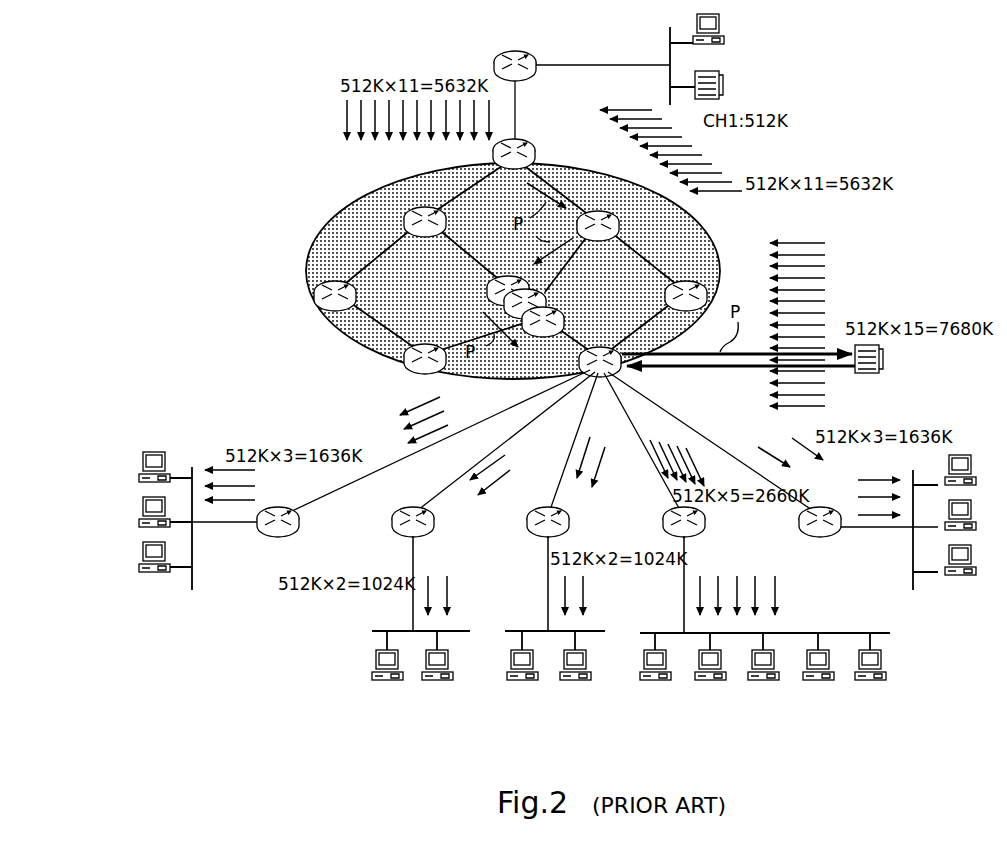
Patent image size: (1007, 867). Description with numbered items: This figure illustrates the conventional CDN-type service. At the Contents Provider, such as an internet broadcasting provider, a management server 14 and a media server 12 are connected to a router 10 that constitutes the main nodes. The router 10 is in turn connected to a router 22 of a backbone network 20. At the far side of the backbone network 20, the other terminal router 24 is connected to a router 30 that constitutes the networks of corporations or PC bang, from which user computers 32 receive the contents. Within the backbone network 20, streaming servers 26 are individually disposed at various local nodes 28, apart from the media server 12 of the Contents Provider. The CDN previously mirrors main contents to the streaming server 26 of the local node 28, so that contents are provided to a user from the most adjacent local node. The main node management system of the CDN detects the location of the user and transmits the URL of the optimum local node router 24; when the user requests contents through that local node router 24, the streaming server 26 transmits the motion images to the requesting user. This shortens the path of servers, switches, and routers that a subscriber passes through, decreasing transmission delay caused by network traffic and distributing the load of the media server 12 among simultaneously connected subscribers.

The router 10 is at (521, 51).
The media server 12 is at (724, 86).
The management server 14 is at (726, 42).
The backbone network 20 is at (333, 216).
The router 22 is at (518, 139).
The terminal router 24 is at (624, 370).
The streaming server 26 is at (883, 358).
The local node 28 is at (545, 289).
The router 30 is at (300, 522).
The client computer 32 is at (158, 578).